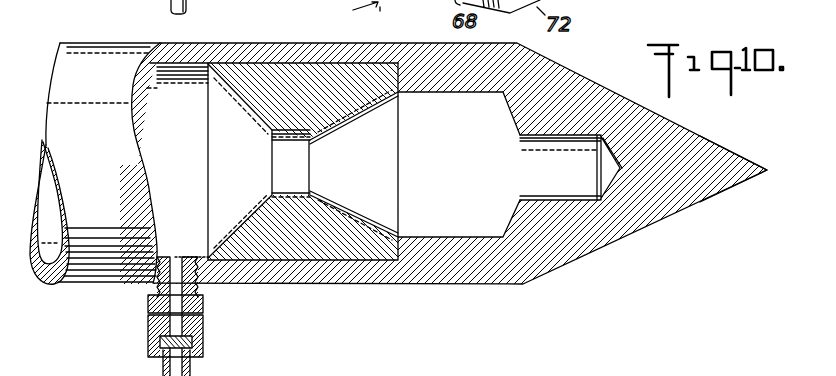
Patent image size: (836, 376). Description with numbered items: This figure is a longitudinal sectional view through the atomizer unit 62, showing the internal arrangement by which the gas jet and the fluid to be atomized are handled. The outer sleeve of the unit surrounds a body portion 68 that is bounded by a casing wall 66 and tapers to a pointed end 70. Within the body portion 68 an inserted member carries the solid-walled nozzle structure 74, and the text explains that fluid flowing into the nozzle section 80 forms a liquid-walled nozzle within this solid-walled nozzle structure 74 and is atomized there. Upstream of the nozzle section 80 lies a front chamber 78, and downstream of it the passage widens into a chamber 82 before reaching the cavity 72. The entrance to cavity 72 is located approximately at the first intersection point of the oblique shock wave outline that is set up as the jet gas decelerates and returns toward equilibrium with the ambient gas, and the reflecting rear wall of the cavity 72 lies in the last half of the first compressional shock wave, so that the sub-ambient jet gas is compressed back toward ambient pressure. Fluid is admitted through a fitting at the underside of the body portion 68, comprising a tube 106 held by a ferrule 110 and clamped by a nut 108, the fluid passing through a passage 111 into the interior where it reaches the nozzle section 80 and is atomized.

The atomizer unit 62 is at (102, 289).
The casing wall 66 is at (249, 52).
The body 68 is at (421, 54).
The pointed tip 70 is at (725, 158).
The cavity 72 is at (578, 171).
The nozzle structure 74 is at (231, 79).
The front chamber 78 is at (245, 168).
The nozzle section 80 is at (298, 169).
The expansion chamber 82 is at (367, 168).
The tube 106 is at (197, 375).
The nut 108 is at (213, 298).
The ferrule 110 is at (189, 343).
The passage 111 is at (240, 98).